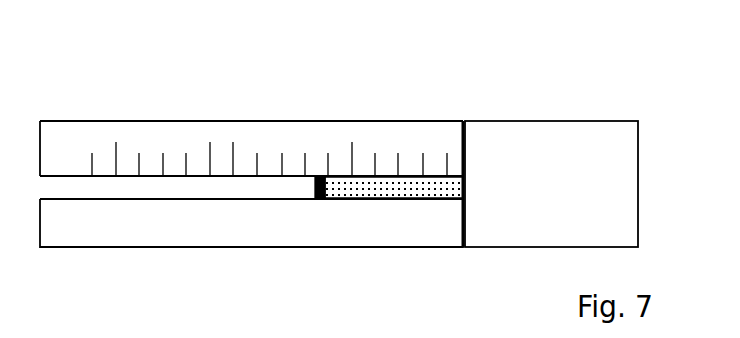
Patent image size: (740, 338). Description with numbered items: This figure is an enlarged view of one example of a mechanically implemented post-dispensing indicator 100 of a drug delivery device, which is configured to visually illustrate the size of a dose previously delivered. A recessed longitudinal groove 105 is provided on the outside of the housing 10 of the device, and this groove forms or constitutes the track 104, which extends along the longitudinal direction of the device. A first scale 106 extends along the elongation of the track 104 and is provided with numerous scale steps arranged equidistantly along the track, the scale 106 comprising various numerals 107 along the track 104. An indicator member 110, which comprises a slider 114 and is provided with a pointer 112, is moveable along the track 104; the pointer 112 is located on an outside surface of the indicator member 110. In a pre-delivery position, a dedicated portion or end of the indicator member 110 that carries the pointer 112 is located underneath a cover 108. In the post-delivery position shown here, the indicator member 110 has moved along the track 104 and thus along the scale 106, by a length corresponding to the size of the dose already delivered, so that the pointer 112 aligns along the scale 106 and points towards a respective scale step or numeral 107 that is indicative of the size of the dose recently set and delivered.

The housing 10 is at (143, 106).
The post-dispensing indicator 100 is at (346, 78).
The track 104 is at (82, 186).
The recessed longitudinal groove 105 is at (189, 186).
The first scale 106 is at (284, 148).
The numerals 107 is at (210, 153).
The cover 108 is at (580, 143).
The indicator member 110 is at (427, 188).
The pointer 112 is at (320, 198).
The slider 114 is at (373, 185).